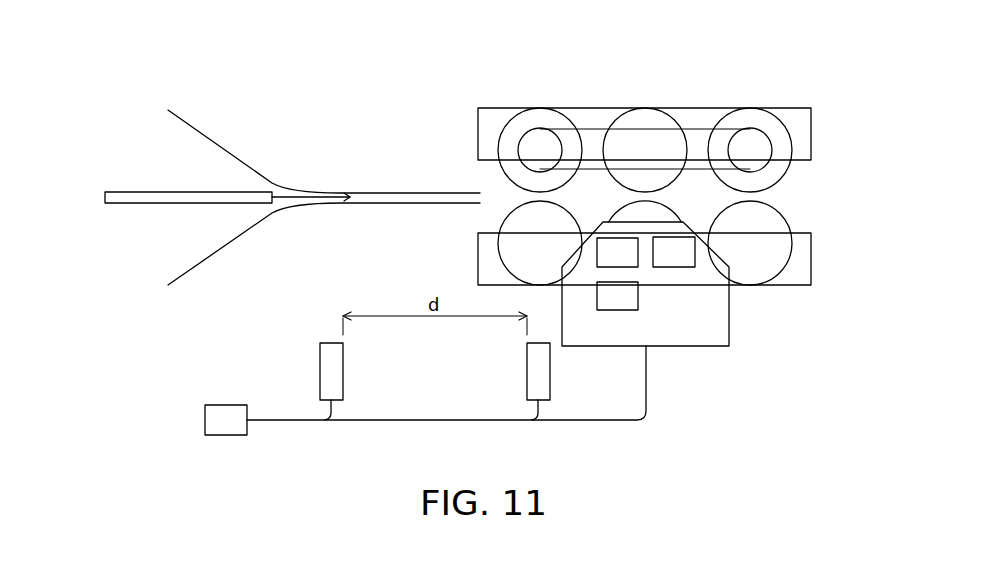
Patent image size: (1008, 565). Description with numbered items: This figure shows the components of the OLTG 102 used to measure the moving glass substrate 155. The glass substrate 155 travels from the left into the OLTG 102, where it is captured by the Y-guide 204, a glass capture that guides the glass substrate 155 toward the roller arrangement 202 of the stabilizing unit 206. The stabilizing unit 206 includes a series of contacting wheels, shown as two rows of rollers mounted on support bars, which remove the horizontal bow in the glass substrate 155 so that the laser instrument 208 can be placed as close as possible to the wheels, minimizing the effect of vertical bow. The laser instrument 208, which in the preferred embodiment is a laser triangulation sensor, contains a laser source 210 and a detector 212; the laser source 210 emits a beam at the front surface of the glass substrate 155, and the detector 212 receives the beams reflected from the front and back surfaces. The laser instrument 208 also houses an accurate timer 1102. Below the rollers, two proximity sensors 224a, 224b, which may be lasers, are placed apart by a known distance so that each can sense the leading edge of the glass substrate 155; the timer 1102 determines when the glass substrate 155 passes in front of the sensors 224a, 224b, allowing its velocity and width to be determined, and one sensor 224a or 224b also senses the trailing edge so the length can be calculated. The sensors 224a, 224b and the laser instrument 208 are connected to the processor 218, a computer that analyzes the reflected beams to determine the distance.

The OLTG 102 is at (786, 36).
The glass substrate 155 is at (125, 192).
The Y-guide 204 is at (208, 137).
The roller assembly 202 is at (457, 143).
The stabilizing unit 206 is at (823, 176).
The laser instrument 208 is at (730, 318).
The detector 212 is at (617, 252).
The laser source 210 is at (674, 252).
The timer 1102 is at (617, 296).
The proximity sensor 224a is at (320, 373).
The proximity sensor 224b is at (527, 375).
The processor 218 is at (425, 390).